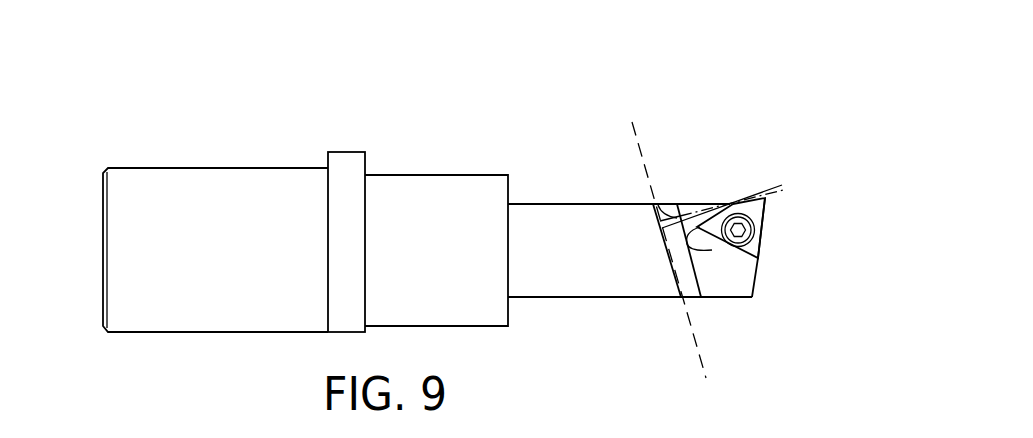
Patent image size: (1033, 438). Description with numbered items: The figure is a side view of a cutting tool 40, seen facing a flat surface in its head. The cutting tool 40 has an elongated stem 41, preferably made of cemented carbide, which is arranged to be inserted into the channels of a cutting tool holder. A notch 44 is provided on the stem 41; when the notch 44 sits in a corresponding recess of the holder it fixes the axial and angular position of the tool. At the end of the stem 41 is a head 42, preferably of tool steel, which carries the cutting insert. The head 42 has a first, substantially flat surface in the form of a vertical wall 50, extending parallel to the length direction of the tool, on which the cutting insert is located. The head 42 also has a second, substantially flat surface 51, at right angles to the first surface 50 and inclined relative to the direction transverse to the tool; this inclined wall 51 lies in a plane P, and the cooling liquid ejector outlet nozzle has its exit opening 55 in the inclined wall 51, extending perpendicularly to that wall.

The cutting tool 40 is at (133, 64).
The stem 41 is at (248, 169).
The notch 44 is at (350, 160).
The head 42 is at (628, 204).
The second flat surface (inclined wall) 51 is at (681, 298).
The first flat surface (vertical wall) 50 is at (732, 278).
The exit opening 55 is at (677, 205).
The plane P is at (642, 148).